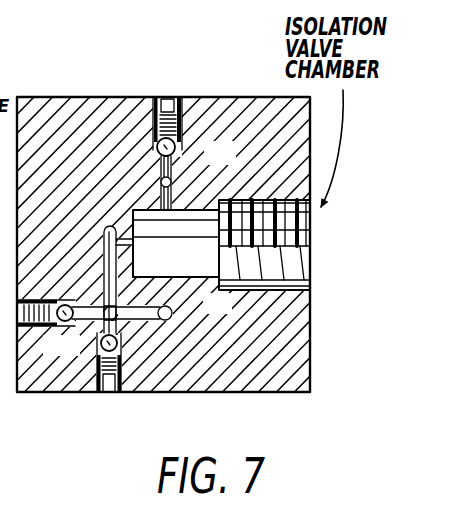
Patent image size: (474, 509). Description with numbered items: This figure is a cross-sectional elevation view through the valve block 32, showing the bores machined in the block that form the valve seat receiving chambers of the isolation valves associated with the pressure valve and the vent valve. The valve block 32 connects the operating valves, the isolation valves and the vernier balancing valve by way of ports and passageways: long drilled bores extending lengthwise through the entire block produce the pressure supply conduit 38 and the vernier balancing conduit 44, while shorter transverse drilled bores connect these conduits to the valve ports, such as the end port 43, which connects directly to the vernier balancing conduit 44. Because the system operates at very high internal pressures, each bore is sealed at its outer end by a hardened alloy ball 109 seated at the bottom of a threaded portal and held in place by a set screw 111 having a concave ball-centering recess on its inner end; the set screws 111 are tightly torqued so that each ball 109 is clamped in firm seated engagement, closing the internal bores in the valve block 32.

The valve block 32 is at (147, 92).
The set screw 111 is at (119, 453).
The hardened alloy ball 109 is at (183, 128).
The pressure supply conduit 38 is at (176, 177).
The end port 43 is at (133, 243).
The vernier balancing conduit 44 is at (173, 310).